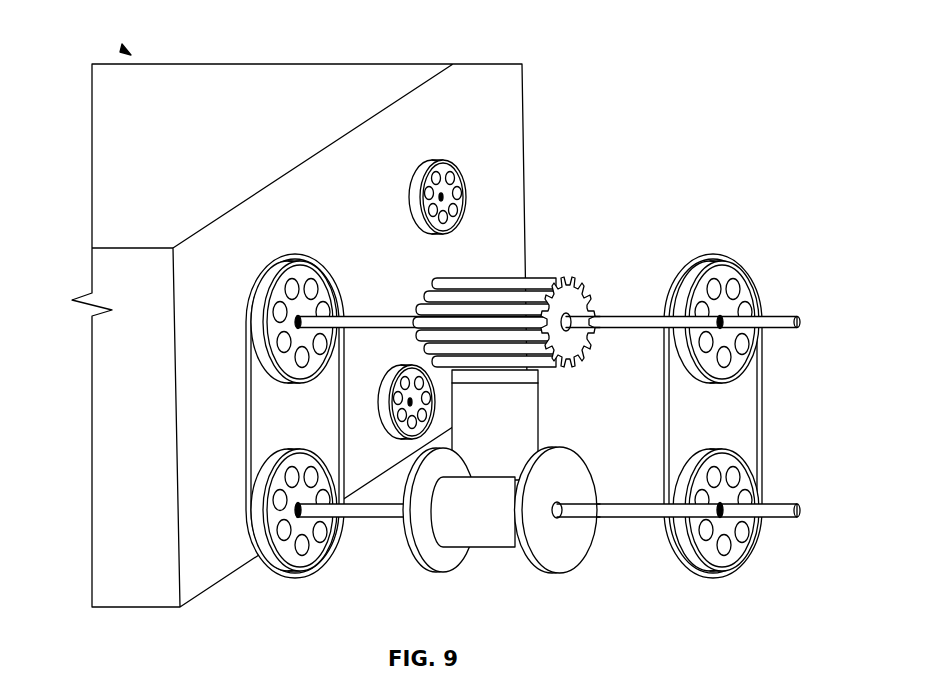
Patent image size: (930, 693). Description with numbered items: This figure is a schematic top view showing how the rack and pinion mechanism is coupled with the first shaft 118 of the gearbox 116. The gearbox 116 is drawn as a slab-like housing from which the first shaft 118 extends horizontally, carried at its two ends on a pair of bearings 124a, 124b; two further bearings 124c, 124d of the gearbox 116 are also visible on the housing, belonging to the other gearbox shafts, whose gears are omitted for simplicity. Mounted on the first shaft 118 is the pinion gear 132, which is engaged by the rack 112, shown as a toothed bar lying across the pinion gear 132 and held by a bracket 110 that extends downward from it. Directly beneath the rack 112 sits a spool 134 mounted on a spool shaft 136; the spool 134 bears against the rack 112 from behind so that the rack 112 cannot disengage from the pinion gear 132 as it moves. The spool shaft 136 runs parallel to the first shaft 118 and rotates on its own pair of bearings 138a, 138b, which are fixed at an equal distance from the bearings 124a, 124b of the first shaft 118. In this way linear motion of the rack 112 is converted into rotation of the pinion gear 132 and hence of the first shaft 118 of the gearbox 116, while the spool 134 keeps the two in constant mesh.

The gearbox 116 is at (126, 50).
The first shaft 118 is at (636, 312).
The bearing 124a is at (338, 292).
The bearing 124b is at (757, 292).
The bearing 124c is at (447, 165).
The bearing 124d is at (380, 412).
The pinion gear 132 is at (588, 298).
The rack 112 is at (572, 370).
The motor bracket 110 is at (541, 418).
The spool 134 is at (488, 548).
The spool shaft 136 is at (650, 519).
The bearing 138a is at (333, 555).
The bearing 138b is at (750, 553).